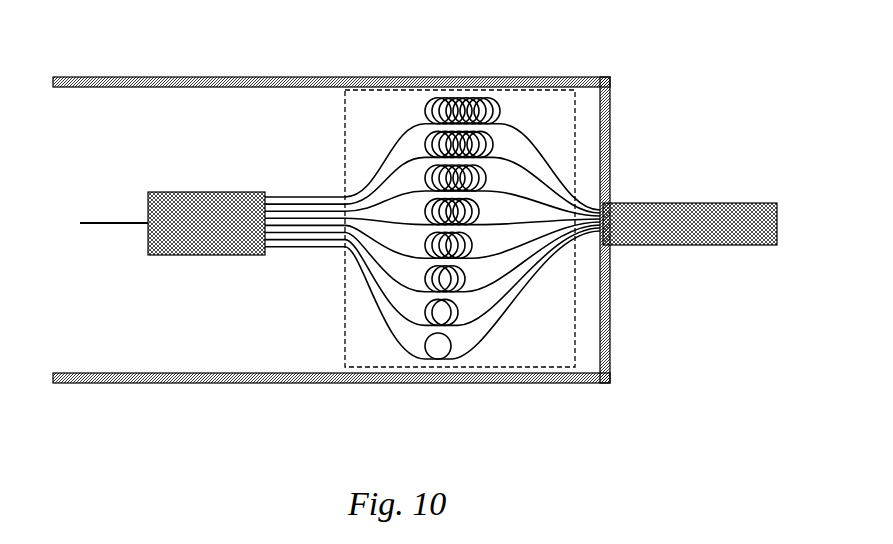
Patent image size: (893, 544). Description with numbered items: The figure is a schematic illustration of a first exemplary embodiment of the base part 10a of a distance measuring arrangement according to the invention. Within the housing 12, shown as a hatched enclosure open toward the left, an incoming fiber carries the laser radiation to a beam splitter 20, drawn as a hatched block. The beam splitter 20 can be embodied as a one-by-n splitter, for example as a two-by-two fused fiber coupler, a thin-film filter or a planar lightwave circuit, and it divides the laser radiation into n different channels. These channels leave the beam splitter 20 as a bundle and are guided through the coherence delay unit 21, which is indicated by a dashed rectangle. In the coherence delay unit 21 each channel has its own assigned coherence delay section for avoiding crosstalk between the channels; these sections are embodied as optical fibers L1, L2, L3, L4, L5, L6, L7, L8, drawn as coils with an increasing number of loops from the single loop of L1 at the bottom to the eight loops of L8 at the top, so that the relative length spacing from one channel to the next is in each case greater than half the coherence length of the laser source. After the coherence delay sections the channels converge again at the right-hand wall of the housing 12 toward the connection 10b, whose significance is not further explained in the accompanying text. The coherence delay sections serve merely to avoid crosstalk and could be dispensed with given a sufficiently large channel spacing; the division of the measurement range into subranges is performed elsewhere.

The housing 12 is at (257, 77).
The beam splitter 20 is at (203, 210).
The coherence delay unit 21 is at (345, 113).
The base part 10a is at (175, 405).
The output connector 10b is at (703, 258).
The optical fiber L1 is at (432, 295).
The optical fiber L2 is at (432, 276).
The optical fiber L3 is at (432, 258).
The optical fiber L4 is at (432, 240).
The optical fiber L5 is at (432, 212).
The optical fiber L6 is at (432, 190).
The optical fiber L7 is at (432, 172).
The optical fiber L8 is at (432, 154).